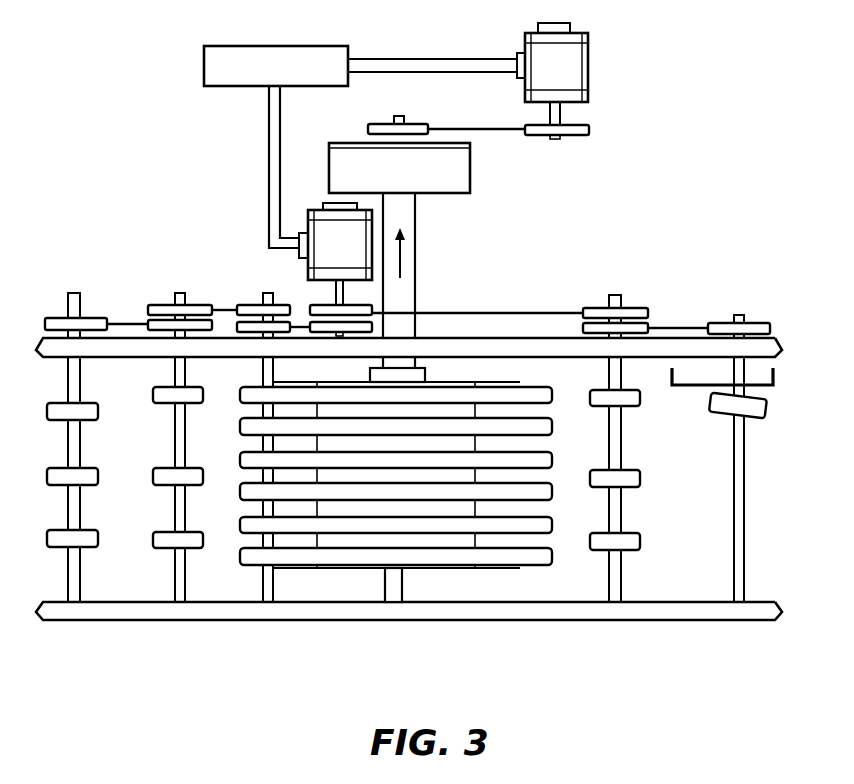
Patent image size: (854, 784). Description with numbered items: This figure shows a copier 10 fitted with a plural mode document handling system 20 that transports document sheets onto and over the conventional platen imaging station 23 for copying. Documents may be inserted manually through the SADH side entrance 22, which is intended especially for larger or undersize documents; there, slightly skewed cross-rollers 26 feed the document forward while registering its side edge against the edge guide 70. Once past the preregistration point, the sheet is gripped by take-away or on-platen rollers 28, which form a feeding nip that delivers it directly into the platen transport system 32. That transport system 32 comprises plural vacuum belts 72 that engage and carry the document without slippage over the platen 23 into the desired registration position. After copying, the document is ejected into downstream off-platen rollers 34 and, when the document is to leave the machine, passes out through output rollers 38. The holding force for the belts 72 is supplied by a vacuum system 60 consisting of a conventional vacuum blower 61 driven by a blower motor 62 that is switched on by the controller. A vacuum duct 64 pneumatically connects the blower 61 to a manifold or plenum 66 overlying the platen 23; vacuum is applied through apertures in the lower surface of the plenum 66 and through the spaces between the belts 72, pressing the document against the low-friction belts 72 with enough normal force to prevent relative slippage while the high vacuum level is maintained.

The copier 10 is at (236, 168).
The document handling system 20 is at (233, 262).
The SADH side entrance 22 is at (767, 409).
The platen imaging station 23 is at (387, 570).
The skewed cross-rollers 26 is at (720, 416).
The take-away or on-platen rollers 28 is at (640, 396).
The platen transport system 32 is at (320, 598).
The off-platen rollers 34 is at (203, 393).
The output rollers 38 is at (98, 407).
The vacuum system 60 is at (446, 234).
The DH vacuum blower 61 is at (470, 178).
The blower motor 62 is at (575, 77).
The vacuum duct 64 is at (405, 288).
The plenum 66 is at (412, 540).
The edge guide 70 is at (778, 397).
The platen transport belts 72 is at (450, 525).